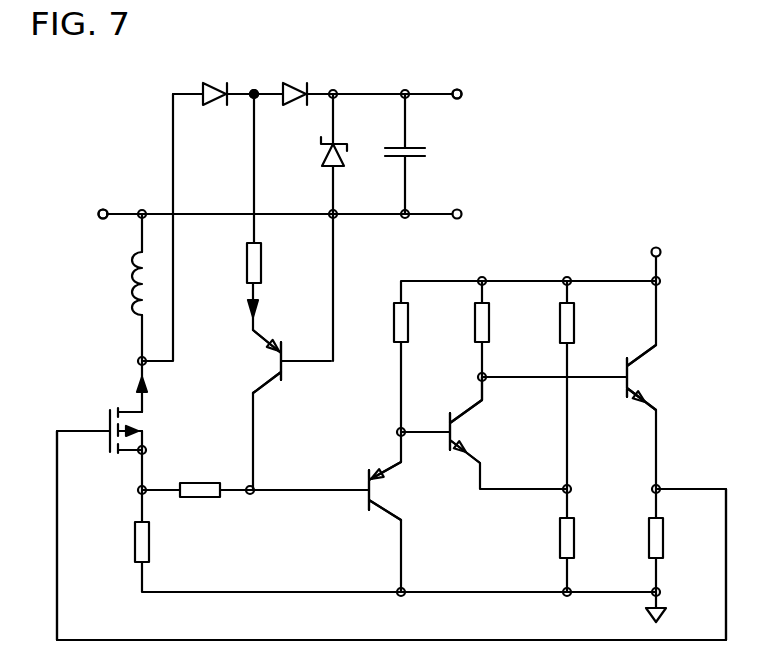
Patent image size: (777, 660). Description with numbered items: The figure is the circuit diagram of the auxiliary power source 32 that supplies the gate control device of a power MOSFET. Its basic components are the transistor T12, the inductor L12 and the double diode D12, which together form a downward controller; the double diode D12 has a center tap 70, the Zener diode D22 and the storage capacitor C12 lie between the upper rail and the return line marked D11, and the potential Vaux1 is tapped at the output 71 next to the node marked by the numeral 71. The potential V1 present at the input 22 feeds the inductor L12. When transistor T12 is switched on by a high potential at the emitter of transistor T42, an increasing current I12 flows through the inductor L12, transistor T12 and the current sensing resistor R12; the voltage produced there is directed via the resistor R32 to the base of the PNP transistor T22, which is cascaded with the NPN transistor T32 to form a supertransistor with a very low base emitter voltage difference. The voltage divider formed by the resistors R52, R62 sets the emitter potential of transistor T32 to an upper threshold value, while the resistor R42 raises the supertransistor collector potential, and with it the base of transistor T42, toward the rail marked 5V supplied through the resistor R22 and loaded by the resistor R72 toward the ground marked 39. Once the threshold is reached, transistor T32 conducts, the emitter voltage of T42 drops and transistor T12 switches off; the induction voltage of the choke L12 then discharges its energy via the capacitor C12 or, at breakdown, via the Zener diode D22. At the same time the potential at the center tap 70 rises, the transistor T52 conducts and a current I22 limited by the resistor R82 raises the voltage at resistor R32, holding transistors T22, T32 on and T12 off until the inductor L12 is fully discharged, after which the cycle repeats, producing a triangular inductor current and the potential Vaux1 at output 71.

The double diode D12 is at (290, 82).
The center tap 70 is at (252, 99).
The output 71 is at (458, 89).
The potential Vaux1 is at (499, 95).
The auxiliary power source 32 is at (575, 85).
The input 22 is at (100, 209).
The potential V1 is at (108, 232).
The Zener diode D22 is at (323, 156).
The capacitor C12 is at (426, 152).
The terminal D11 is at (484, 210).
The inductor L12 is at (130, 283).
The resistor R82 is at (245, 260).
The current I22 is at (275, 311).
The transistor T52 is at (273, 361).
The 5V supply terminal 5V is at (655, 237).
The resistor R22 is at (394, 322).
The resistor R42 is at (474, 322).
The resistor R62 is at (559, 322).
The transistor T42 is at (632, 377).
The current I12 is at (164, 387).
The transistor T12 is at (108, 418).
The NPN bipolar transistor T32 is at (455, 432).
The PNP bipolar transistor T22 is at (374, 490).
The current sensing resistor R12 is at (134, 542).
The resistor R32 is at (200, 500).
The resistor R52 is at (558, 538).
The resistor R72 is at (648, 540).
The ground 39 is at (660, 594).